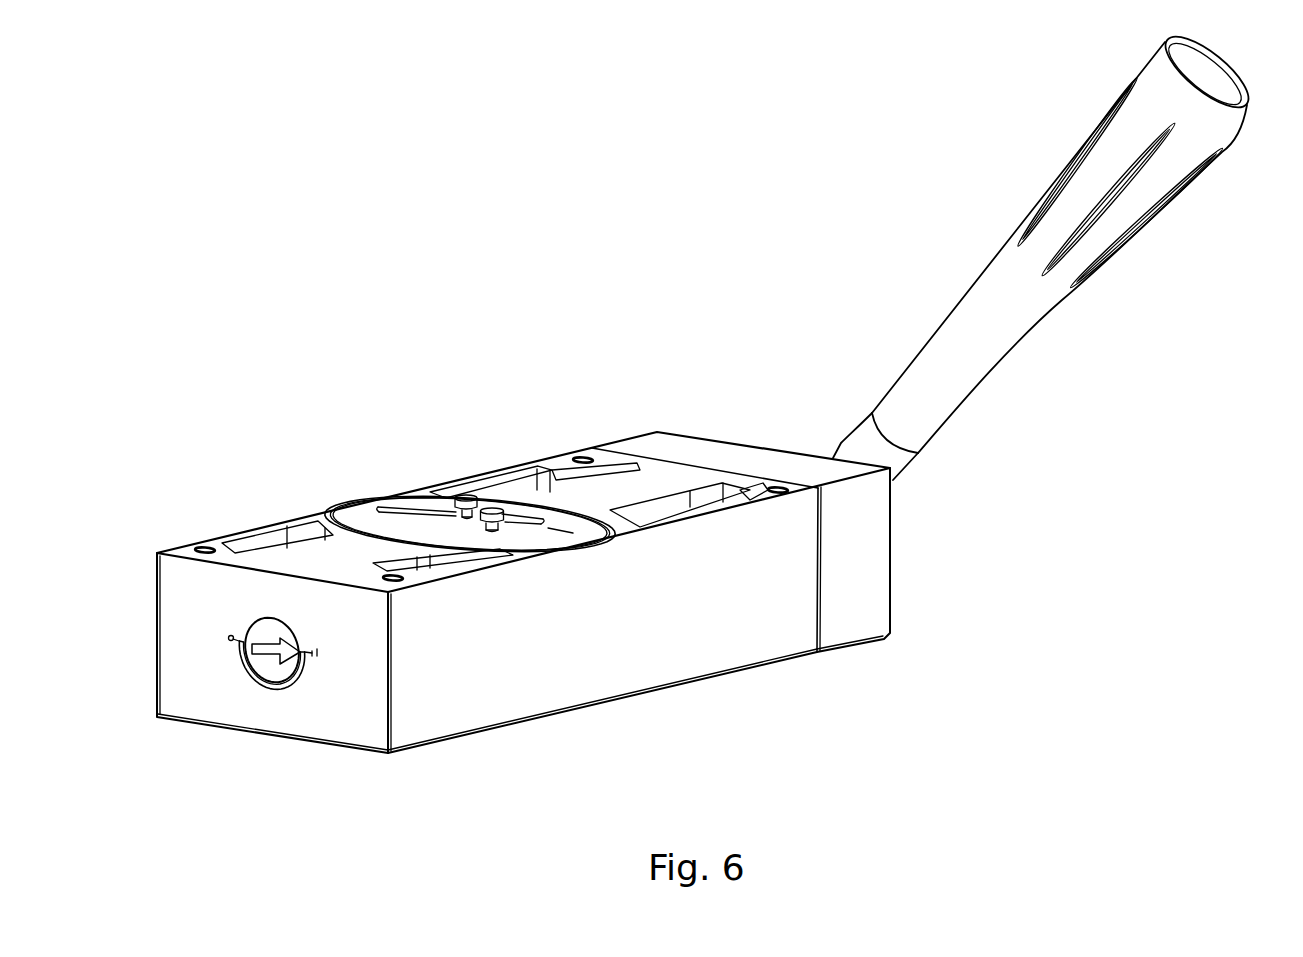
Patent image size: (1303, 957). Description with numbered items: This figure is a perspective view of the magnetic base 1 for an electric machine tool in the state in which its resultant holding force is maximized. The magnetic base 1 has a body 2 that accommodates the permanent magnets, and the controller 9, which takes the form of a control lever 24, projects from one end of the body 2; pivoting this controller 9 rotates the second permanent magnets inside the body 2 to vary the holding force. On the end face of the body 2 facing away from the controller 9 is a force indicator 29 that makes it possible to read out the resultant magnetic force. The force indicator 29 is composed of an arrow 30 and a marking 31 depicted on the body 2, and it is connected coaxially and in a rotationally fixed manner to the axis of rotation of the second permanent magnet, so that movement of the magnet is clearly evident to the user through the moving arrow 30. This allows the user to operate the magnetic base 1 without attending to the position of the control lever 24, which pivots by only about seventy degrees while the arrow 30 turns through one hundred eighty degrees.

The magnetic base 1 is at (500, 428).
The body 2 is at (740, 590).
The controller 9 is at (992, 252).
The control lever 24 is at (947, 368).
The force indicator 29 is at (273, 665).
The arrow 30 is at (275, 650).
The marking 31 is at (306, 683).